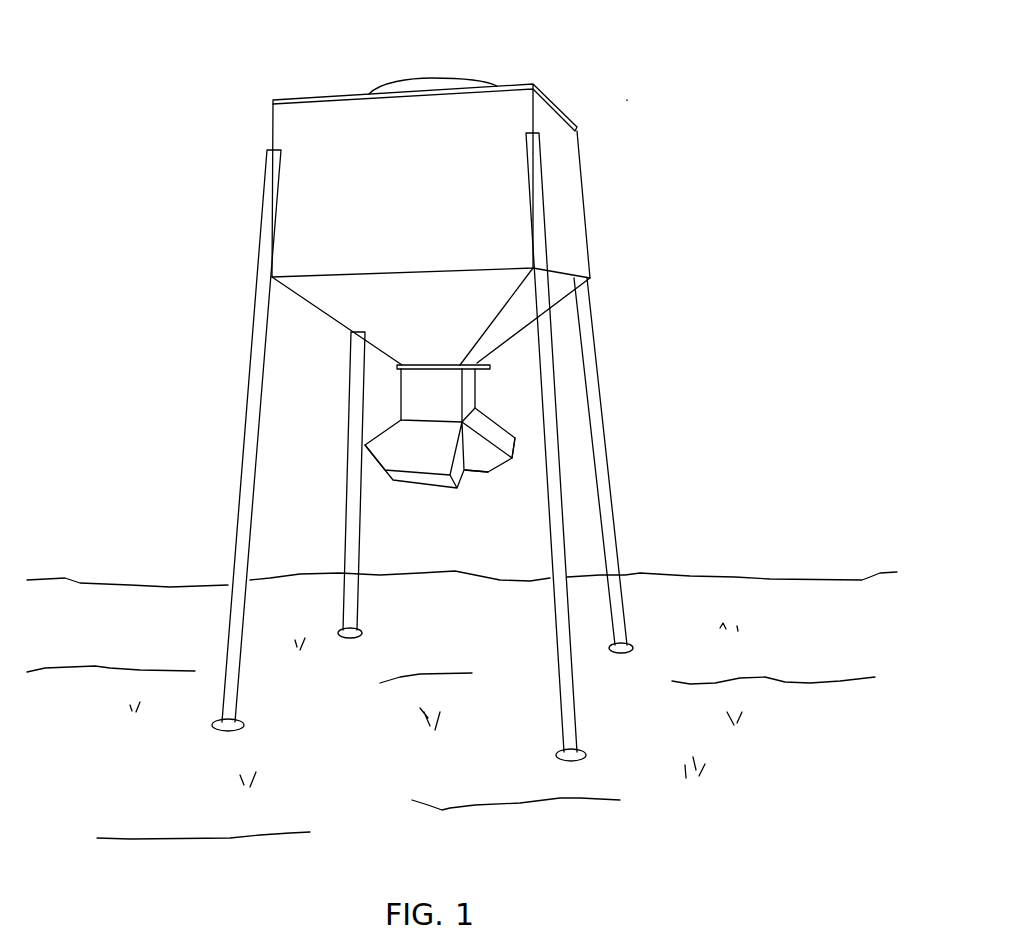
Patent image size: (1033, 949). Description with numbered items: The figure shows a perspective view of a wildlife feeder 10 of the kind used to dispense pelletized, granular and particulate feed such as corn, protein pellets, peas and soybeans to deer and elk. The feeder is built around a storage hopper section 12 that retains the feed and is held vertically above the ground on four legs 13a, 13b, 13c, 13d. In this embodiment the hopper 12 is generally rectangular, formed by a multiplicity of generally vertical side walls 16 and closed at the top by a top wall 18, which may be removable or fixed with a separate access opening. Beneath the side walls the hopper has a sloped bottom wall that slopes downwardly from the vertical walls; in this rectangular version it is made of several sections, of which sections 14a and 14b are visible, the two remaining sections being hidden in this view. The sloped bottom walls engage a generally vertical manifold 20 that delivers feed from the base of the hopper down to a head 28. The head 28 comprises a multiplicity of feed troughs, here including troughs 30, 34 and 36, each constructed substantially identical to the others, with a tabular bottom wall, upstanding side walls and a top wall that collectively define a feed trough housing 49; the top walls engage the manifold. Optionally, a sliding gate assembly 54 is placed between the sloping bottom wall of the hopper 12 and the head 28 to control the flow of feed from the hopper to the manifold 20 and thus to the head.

The wildlife feeder 10 is at (627, 100).
The storage hopper section 12 is at (573, 212).
The leg 13a is at (610, 478).
The leg 13b is at (553, 601).
The leg 13c is at (346, 540).
The leg 13d is at (250, 380).
The bottom wall section 14a is at (402, 316).
The bottom wall section 14b is at (553, 288).
The side wall 16 is at (402, 183).
The top wall 18 is at (507, 83).
The manifold 20 is at (422, 393).
The head 28 is at (485, 422).
The feed trough 30 is at (423, 483).
The feed trough 34 is at (377, 450).
The feed trough 36 is at (488, 468).
The feed trough housing 49 is at (520, 465).
The sliding gate assembly 54 is at (490, 369).